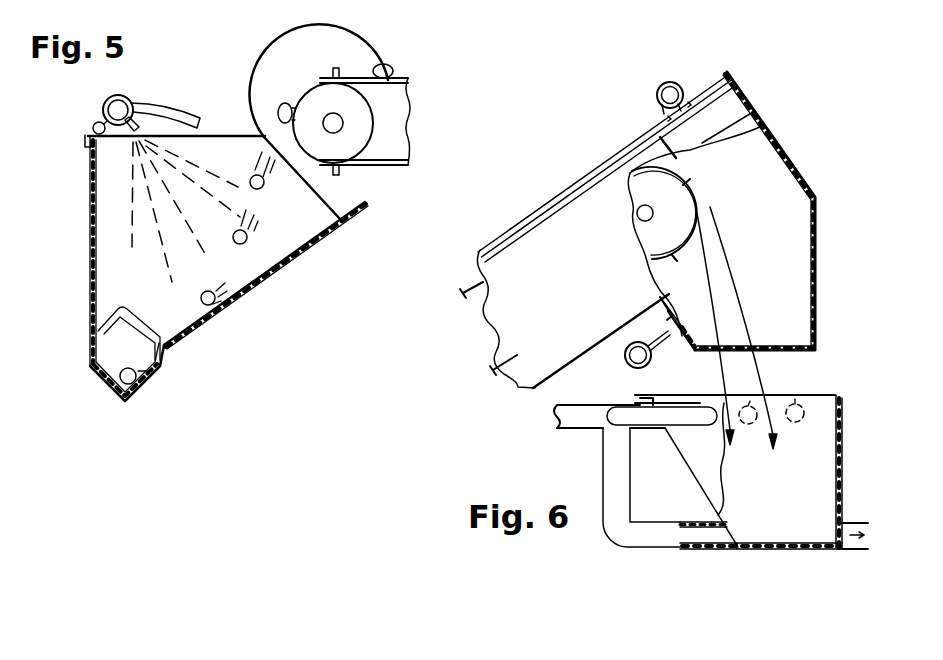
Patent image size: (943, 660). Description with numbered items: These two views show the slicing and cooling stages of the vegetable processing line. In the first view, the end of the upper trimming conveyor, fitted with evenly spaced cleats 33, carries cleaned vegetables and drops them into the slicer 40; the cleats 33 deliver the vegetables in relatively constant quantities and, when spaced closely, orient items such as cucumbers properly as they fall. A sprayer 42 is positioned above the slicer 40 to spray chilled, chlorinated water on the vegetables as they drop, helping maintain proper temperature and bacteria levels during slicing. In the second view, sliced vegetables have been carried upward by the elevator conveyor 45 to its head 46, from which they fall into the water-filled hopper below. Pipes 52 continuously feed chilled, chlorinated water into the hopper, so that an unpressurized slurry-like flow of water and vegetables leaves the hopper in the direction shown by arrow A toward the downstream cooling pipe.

In FIG. 5, the cleats 33 is at (337, 67).
In FIG. 5, the slicer 40 is at (243, 288).
In FIG. 5, the sprayer 42 is at (112, 97).
In FIG. 6, the elevator conveyor 45 is at (550, 208).
In FIG. 6, the head 46 is at (770, 172).
In FIG. 6, the pipes 52 is at (790, 396).
In FIG. 6, the arrow A is at (852, 544).